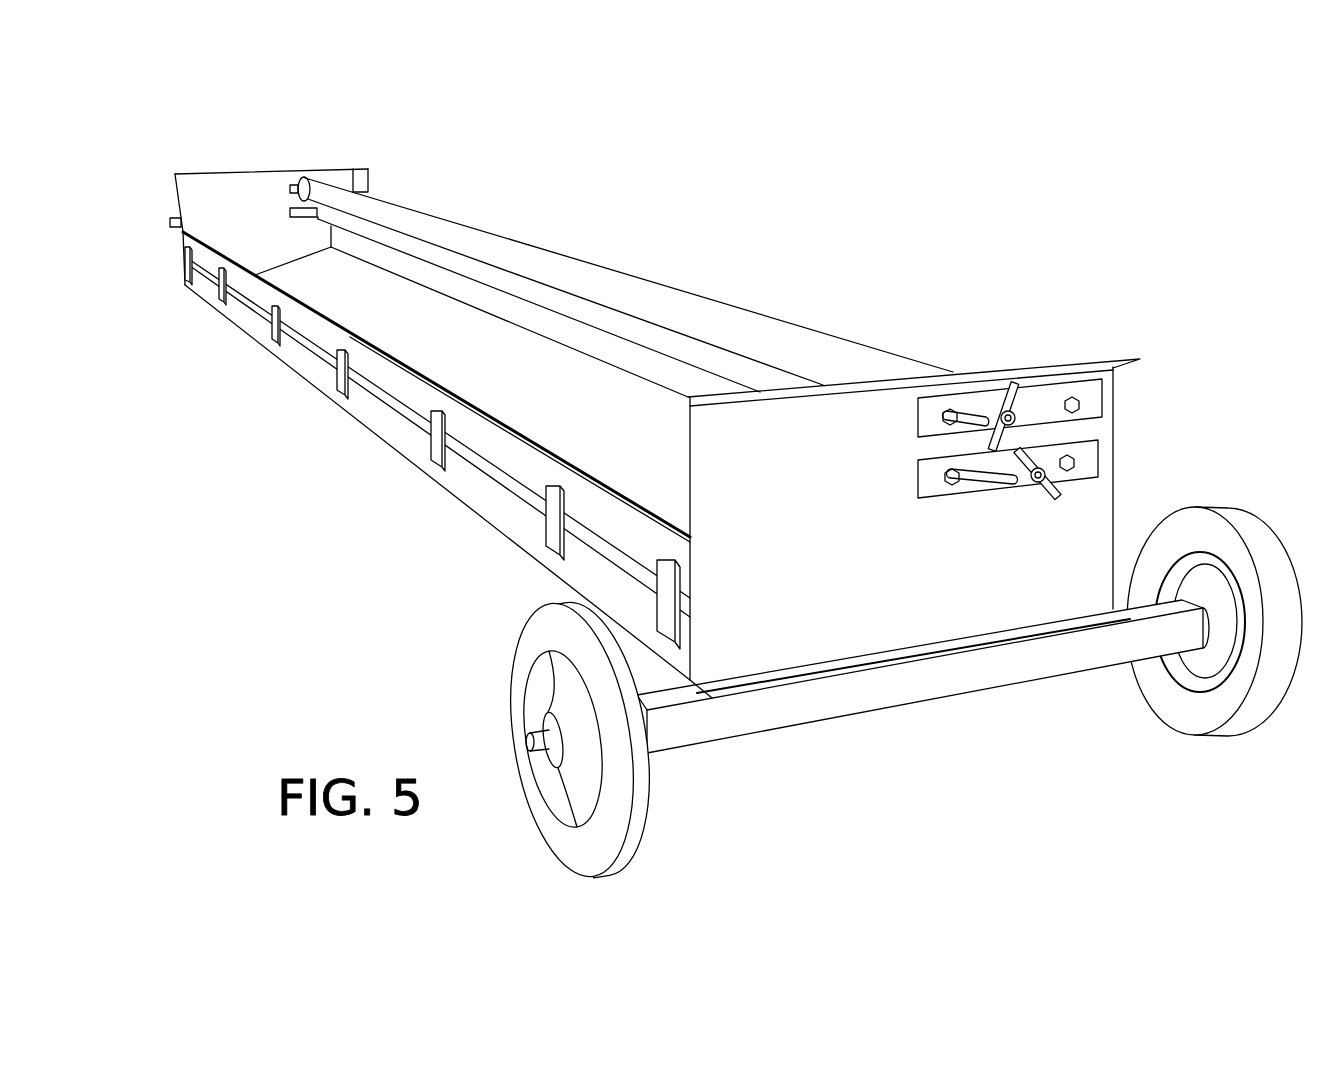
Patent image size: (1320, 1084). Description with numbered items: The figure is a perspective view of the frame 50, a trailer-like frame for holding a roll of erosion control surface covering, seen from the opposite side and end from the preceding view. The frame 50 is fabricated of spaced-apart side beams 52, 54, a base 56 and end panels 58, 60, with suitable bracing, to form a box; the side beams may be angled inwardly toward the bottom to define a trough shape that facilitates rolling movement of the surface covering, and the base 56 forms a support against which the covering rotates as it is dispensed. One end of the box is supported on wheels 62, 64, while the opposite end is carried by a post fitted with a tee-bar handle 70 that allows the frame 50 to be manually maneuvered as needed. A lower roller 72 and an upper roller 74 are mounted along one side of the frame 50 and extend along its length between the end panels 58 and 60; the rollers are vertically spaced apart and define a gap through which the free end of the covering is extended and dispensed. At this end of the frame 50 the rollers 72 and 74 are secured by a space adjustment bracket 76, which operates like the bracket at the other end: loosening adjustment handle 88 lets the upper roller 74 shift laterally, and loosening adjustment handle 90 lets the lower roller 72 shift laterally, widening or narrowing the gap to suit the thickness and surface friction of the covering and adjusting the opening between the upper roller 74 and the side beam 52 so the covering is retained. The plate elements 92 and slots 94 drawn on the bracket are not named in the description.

The frame 50 is at (813, 146).
The side beam 52 is at (300, 353).
The side beam 54 is at (612, 350).
The base 56 is at (310, 270).
The end panel 58 is at (222, 182).
The end panel 60 is at (855, 617).
The wheel 62 is at (620, 843).
The wheel 64 is at (1183, 708).
The tee-bar handle 70 is at (170, 222).
The lower roller 72 is at (398, 245).
The upper roller 74 is at (535, 253).
The space adjustment bracket 76 is at (1127, 377).
The adjustment handle 88 is at (1013, 387).
The adjustment handle 90 is at (1028, 457).
The bracket plate 92 is at (353, 170).
The slot 94 is at (293, 210).